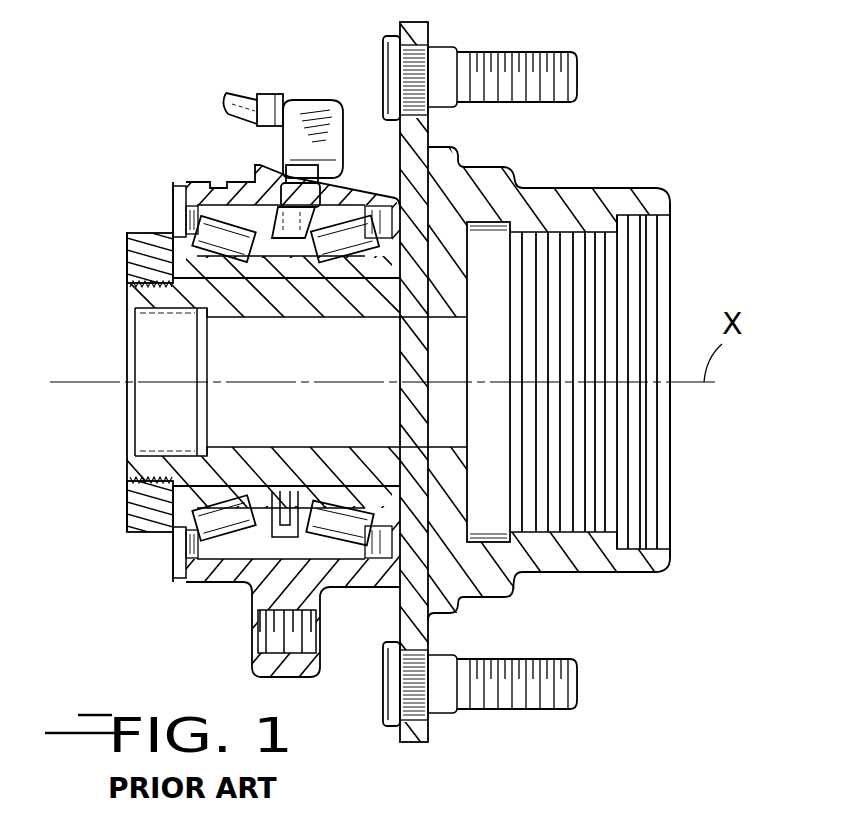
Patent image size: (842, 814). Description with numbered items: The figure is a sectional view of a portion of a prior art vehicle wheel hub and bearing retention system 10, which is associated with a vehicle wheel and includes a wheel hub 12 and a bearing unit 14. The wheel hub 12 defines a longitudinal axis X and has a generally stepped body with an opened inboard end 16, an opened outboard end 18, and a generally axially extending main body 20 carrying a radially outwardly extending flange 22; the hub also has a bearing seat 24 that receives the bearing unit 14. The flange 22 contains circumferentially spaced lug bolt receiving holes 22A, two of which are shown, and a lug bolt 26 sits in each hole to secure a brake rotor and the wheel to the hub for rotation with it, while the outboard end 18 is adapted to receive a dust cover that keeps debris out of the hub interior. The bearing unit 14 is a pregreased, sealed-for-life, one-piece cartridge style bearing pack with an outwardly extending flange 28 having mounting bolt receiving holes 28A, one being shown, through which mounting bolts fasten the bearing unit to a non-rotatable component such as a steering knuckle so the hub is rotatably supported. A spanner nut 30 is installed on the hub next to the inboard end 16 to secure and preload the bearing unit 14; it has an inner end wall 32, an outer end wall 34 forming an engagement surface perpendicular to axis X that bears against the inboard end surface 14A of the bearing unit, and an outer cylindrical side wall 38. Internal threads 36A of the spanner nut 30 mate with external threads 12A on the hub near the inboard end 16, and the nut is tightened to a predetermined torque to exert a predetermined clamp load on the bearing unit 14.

The vehicle wheel hub and bearing retention system 10 is at (634, 85).
The wheel hub 12 is at (570, 184).
The external threads 12A is at (138, 480).
The bearing unit 14 is at (168, 556).
The inboard end surface 14A is at (172, 533).
The opened inboard end 16 is at (135, 290).
The opened outboard end 18 is at (672, 546).
The main body 20 is at (413, 460).
The flange 22 is at (428, 730).
The lug bolt receiving holes 22A is at (420, 62).
The bearing seat 24 is at (309, 298).
The lug bolt 26 is at (580, 70).
The flange 28 is at (305, 677).
The mounting bolt receiving holes 28A is at (258, 643).
The spanner nut 30 is at (120, 510).
The inner end wall 32 is at (127, 244).
The outer end wall 34 is at (187, 238).
The internal threads 36A is at (150, 455).
The outer cylindrical side wall 38 is at (145, 232).